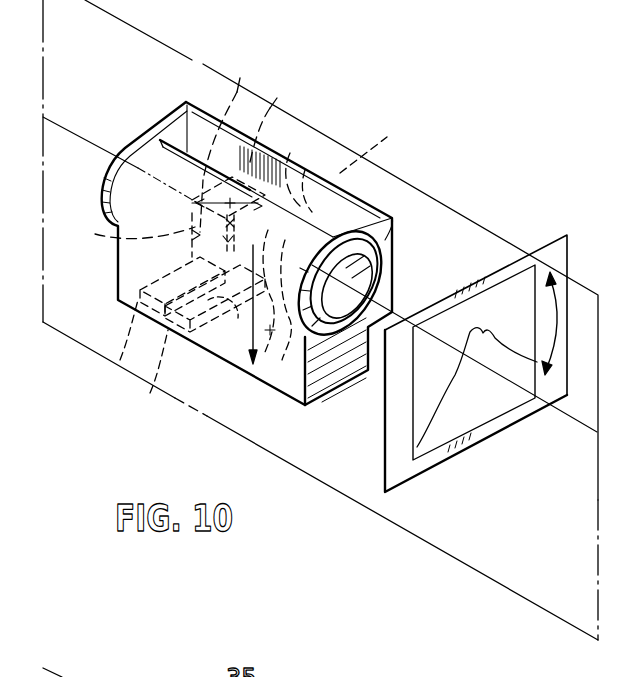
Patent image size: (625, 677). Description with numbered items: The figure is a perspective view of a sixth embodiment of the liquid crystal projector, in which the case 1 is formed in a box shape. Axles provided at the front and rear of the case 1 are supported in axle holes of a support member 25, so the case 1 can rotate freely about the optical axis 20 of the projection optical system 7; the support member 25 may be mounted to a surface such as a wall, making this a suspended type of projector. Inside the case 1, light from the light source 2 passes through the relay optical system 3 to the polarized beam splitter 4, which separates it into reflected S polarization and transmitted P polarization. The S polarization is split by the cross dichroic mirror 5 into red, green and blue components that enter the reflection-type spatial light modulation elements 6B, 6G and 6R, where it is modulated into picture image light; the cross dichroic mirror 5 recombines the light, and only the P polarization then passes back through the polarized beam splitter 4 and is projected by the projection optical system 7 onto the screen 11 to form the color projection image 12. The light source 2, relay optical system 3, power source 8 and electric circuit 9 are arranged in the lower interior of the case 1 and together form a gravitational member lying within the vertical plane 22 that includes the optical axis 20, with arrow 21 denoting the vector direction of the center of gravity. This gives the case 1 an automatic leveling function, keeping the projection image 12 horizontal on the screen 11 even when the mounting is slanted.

The case 1 is at (137, 270).
The light source 2 is at (253, 380).
The relay optical system 3 is at (274, 383).
The polarized beam splitter 4 is at (348, 157).
The cross dichroic mirror 5 is at (266, 130).
The spatial light modulation element 6G is at (230, 140).
The spatial light modulation element 6R is at (290, 153).
The spatial light modulation element 6B is at (126, 235).
The projection optical system 7 is at (387, 173).
The power source 8 is at (120, 360).
The electric circuit 9 is at (150, 393).
The screen 11 is at (552, 250).
The projection image 12 is at (507, 290).
The optical axis 20 is at (580, 420).
The arrow 21 is at (250, 356).
The vertical plane 22 is at (463, 532).
The support member 25 is at (388, 235).